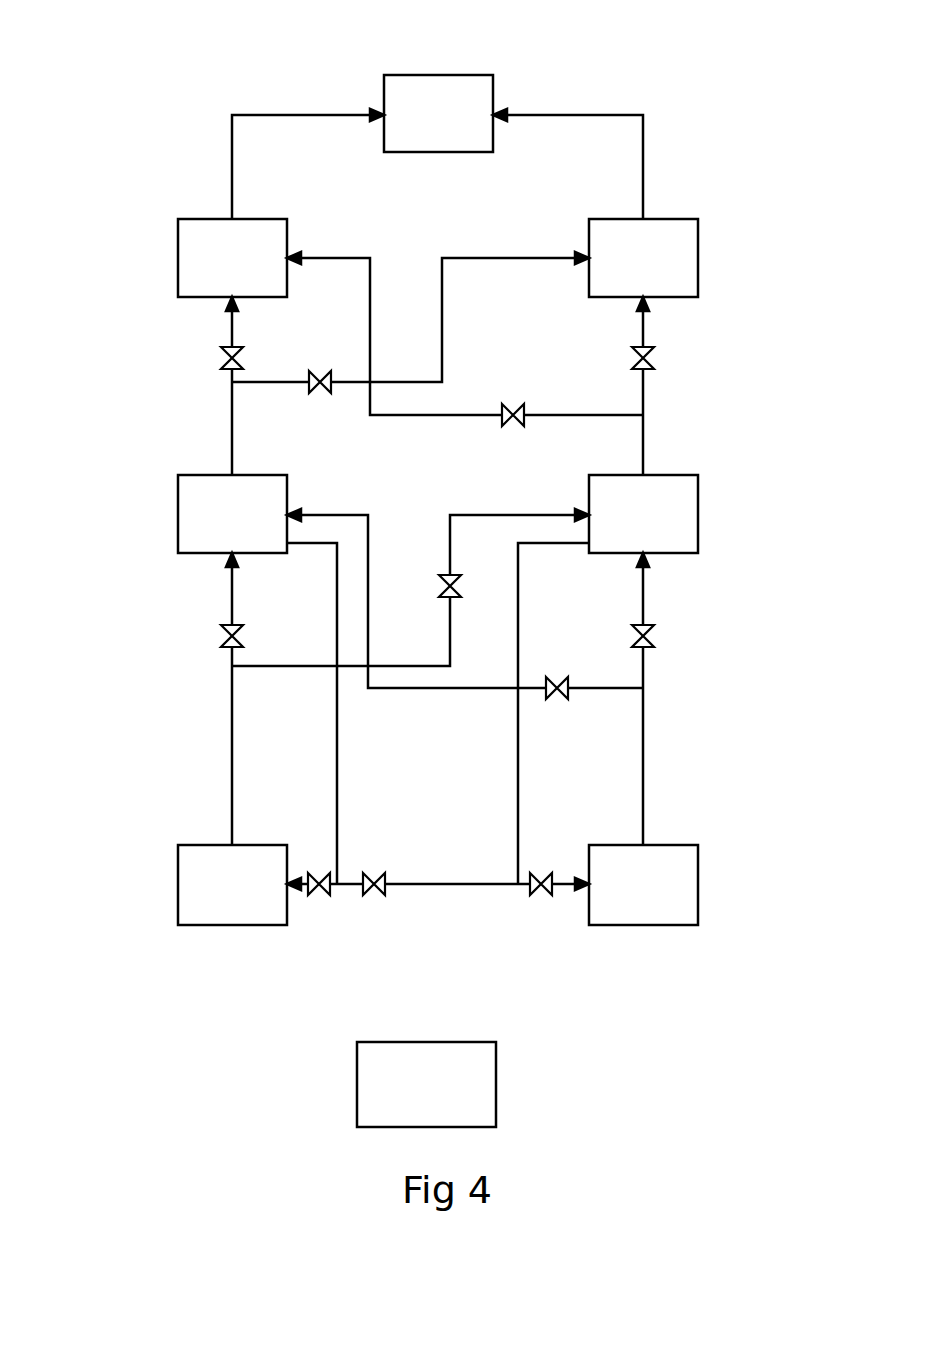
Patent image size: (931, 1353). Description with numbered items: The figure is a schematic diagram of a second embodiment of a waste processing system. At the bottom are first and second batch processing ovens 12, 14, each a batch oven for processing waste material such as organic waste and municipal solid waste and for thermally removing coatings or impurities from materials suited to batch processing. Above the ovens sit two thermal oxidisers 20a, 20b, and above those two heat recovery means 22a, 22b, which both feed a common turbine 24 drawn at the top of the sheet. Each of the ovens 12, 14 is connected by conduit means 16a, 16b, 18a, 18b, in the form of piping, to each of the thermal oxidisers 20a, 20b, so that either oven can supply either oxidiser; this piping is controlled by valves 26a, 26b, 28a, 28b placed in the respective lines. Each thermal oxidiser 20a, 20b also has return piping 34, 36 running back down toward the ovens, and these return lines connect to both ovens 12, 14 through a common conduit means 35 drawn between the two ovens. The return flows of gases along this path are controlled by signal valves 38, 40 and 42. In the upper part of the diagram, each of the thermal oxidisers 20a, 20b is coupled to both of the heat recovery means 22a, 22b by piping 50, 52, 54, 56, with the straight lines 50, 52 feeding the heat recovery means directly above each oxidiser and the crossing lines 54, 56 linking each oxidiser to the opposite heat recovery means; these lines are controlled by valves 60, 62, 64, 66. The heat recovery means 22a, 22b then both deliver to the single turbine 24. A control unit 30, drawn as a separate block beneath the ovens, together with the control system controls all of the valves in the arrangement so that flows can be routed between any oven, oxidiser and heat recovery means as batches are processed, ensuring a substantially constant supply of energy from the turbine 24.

The first batch processing oven 12 is at (190, 880).
The second batch processing oven 14 is at (683, 886).
The conduit means 16a is at (233, 595).
The conduit means 16b is at (495, 514).
The conduit means 18a is at (645, 590).
The conduit means 18b is at (437, 690).
The first thermal oxidiser 20a is at (190, 512).
The second thermal oxidiser 20b is at (683, 512).
The first heat recovery means 22a is at (190, 255).
The second heat recovery means 22b is at (685, 258).
The turbine 24 is at (441, 82).
The valve 26a is at (222, 638).
The valve 26b is at (440, 585).
The valve 28a is at (655, 638).
The valve 28b is at (557, 678).
The control unit 30 is at (475, 1068).
The return piping 34 is at (337, 740).
The conduit means 35 is at (440, 887).
The return piping 36 is at (518, 778).
The signal valve 38 is at (318, 895).
The signal valve 40 is at (541, 895).
The signal valve 42 is at (374, 895).
The piping 50 is at (232, 410).
The piping 52 is at (645, 390).
The piping 54 is at (442, 300).
The piping 56 is at (575, 415).
The valve 60 is at (222, 360).
The valve 62 is at (655, 358).
The valve 64 is at (320, 371).
The valve 66 is at (513, 404).